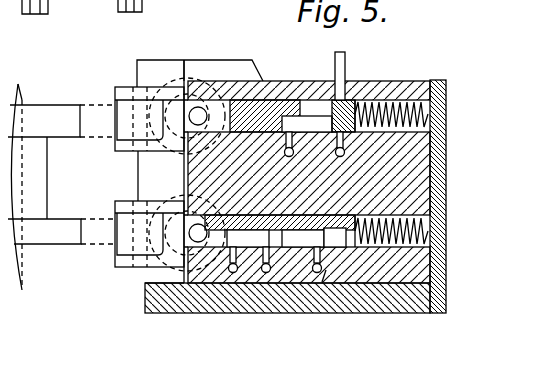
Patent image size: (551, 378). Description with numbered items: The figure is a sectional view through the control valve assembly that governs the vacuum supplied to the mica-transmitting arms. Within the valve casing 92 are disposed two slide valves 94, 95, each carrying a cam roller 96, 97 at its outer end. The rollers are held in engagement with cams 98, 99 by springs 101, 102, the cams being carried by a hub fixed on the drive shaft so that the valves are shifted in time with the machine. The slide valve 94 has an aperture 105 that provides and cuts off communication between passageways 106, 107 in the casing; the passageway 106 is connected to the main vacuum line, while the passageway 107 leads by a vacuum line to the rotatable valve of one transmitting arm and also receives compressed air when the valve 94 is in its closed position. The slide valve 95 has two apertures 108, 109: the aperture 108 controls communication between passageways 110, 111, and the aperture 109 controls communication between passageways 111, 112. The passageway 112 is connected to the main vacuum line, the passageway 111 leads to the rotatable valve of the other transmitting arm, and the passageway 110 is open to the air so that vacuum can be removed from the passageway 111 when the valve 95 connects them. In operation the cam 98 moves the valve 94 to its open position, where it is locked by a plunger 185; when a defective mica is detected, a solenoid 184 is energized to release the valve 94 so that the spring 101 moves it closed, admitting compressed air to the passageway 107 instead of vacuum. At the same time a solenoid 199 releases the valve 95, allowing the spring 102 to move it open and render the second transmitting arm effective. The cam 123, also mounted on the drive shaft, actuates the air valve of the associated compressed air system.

The valve casing 92 is at (220, 92).
The slide valve 94 is at (285, 100).
The slide valve 95 is at (412, 245).
The cam roller 96 is at (118, 112).
The cam roller 97 is at (117, 241).
The cam 98 is at (48, 110).
The cam 99 is at (58, 250).
The spring 101 is at (400, 98).
The spring 102 is at (425, 312).
The aperture 105 is at (345, 82).
The passageway 106 is at (265, 102).
The passageway 107 is at (338, 58).
The aperture 108 is at (266, 273).
The aperture 109 is at (318, 273).
The passageway 110 is at (233, 273).
The passageway 111 is at (273, 250).
The passageway 112 is at (322, 282).
The cam 123 is at (318, 96).
The solenoid 184 is at (188, 62).
The plunger 185 is at (175, 118).
The solenoid 199 is at (125, 296).